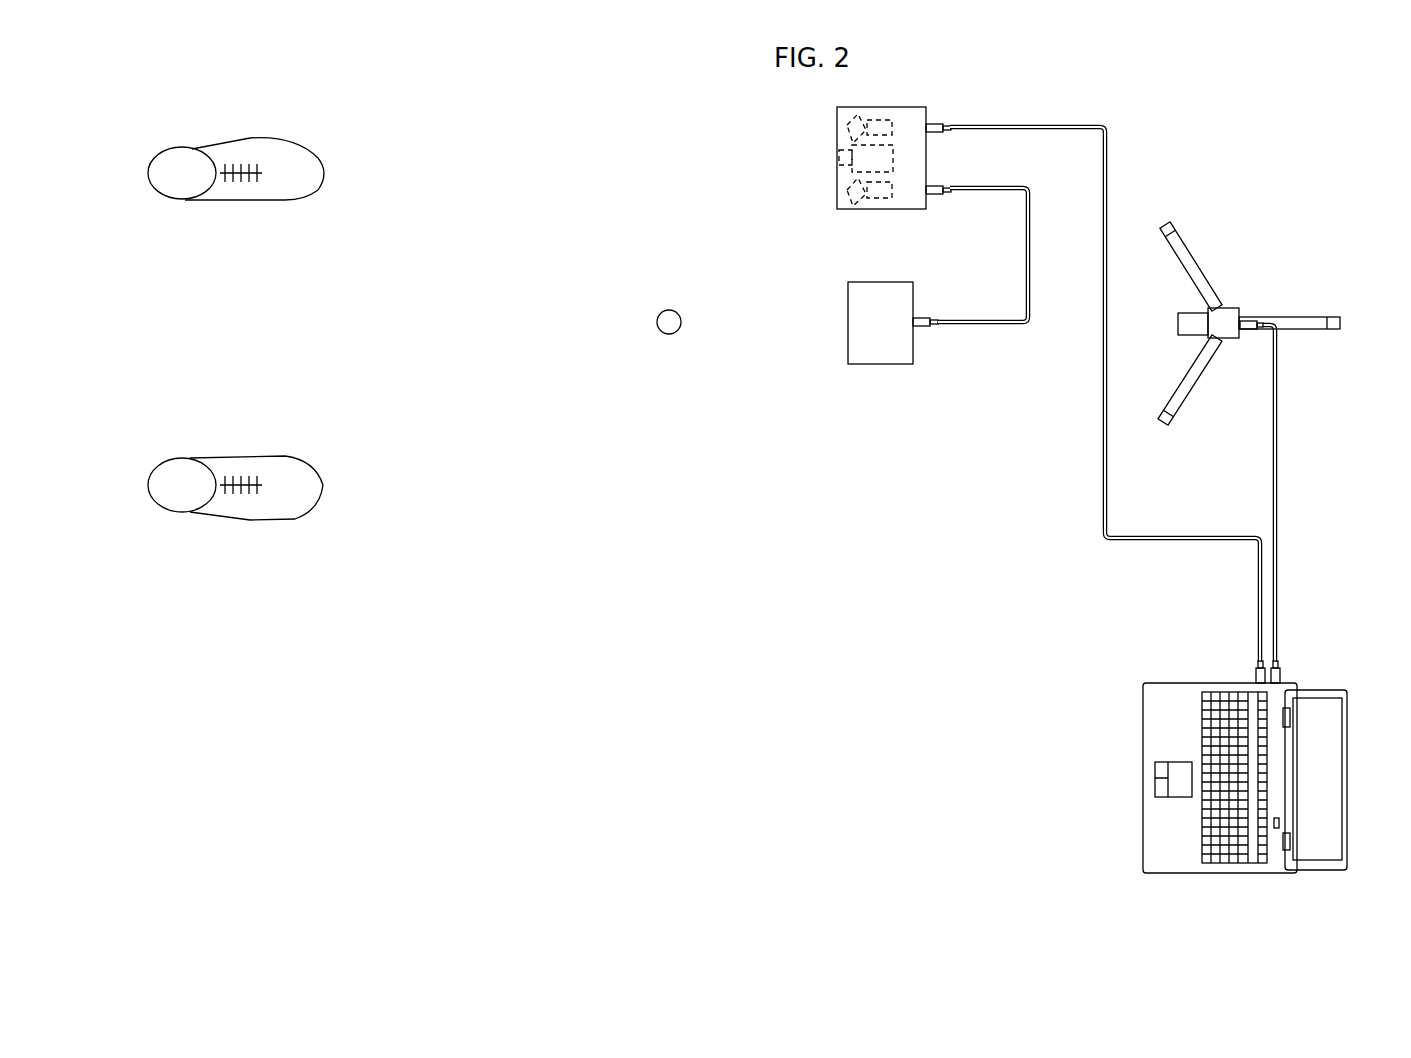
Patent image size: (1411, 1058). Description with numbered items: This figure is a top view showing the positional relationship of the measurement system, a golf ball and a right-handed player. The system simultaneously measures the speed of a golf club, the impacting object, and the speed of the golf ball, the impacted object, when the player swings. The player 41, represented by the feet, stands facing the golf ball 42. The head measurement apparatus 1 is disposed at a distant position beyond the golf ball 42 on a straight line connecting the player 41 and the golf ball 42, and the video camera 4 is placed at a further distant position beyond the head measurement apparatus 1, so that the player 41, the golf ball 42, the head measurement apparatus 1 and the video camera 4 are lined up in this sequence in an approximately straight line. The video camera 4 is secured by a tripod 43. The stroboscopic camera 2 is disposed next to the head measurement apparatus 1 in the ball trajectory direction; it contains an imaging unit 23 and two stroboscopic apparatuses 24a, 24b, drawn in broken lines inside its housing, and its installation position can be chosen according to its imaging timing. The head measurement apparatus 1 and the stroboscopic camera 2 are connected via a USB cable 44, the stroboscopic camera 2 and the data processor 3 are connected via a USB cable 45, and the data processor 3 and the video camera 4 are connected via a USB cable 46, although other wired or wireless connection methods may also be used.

The head measurement apparatus 1 is at (878, 366).
The stroboscopic camera 2 is at (858, 146).
The data processor 3 is at (1143, 736).
The video camera 4 is at (1249, 323).
The imaging unit 23 is at (836, 160).
The stroboscopic apparatus 24a is at (836, 122).
The stroboscopic apparatus 24b is at (836, 195).
The player 41 is at (256, 520).
The golf ball 42 is at (667, 334).
The tripod 43 is at (1308, 330).
The USB cable 44 is at (1031, 252).
The USB cable 45 is at (1187, 537).
The USB cable 46 is at (1278, 548).